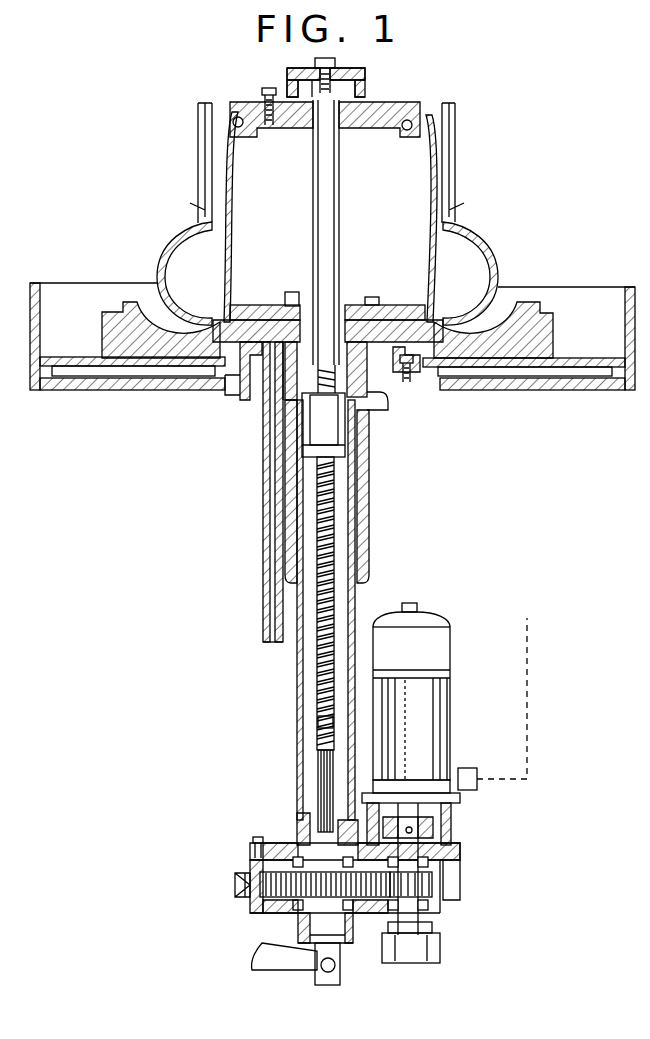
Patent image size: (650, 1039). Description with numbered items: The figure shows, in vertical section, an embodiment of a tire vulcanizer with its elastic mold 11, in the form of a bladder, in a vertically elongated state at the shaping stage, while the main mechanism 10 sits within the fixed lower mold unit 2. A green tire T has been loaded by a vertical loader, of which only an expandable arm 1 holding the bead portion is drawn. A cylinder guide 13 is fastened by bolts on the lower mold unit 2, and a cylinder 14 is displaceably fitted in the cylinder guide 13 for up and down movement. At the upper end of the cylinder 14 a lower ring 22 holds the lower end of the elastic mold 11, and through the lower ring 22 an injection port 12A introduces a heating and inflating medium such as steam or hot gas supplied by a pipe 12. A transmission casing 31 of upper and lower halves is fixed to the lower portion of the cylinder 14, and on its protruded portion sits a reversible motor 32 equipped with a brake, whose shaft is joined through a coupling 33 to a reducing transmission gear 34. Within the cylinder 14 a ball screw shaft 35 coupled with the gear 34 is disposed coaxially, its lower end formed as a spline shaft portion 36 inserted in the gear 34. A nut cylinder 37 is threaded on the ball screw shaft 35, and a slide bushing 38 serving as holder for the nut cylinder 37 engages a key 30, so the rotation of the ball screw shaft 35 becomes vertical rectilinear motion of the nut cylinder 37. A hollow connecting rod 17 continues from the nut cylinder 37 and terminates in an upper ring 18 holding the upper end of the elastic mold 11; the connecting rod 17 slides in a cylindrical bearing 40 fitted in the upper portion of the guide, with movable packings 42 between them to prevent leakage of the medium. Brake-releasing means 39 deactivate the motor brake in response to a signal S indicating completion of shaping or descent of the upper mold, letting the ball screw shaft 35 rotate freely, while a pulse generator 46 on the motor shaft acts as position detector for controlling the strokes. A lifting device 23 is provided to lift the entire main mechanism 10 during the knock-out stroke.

The expandable arm 1 is at (449, 145).
The fixed lower mold unit 2 is at (572, 392).
The main mechanism 10 is at (296, 710).
The elastic mold 11 is at (427, 208).
The pipe 12 is at (264, 520).
The injection port 12A is at (281, 296).
The cylinder guide 13 is at (368, 480).
The cylinder 14 is at (296, 665).
The connecting rod 17 is at (341, 222).
The upper ring 18 is at (398, 108).
The lower ring 22 is at (385, 312).
The lifting device 23 is at (285, 957).
The key 30 is at (346, 566).
The transmission casing 31 is at (253, 862).
The reversible motor 32 is at (437, 720).
The coupling 33 is at (422, 828).
The reducing transmission gear 34 is at (282, 900).
The ball screw shaft 35 is at (318, 718).
The spline shaft portion 36 is at (318, 796).
The nut cylinder 37 is at (328, 427).
The slide bushing 38 is at (305, 430).
The brake-releasing means 39 is at (464, 768).
The cylindrical bearing 40 is at (272, 385).
The movable packings 42 is at (293, 294).
The pulse generator 46 is at (405, 950).
The signal S is at (504, 687).
The green tire T is at (478, 233).